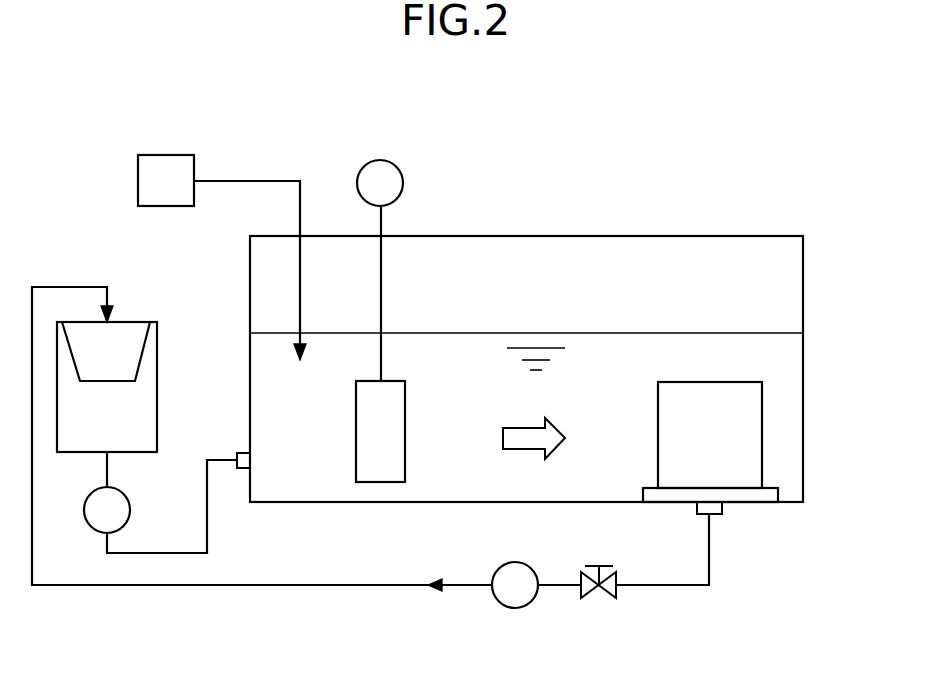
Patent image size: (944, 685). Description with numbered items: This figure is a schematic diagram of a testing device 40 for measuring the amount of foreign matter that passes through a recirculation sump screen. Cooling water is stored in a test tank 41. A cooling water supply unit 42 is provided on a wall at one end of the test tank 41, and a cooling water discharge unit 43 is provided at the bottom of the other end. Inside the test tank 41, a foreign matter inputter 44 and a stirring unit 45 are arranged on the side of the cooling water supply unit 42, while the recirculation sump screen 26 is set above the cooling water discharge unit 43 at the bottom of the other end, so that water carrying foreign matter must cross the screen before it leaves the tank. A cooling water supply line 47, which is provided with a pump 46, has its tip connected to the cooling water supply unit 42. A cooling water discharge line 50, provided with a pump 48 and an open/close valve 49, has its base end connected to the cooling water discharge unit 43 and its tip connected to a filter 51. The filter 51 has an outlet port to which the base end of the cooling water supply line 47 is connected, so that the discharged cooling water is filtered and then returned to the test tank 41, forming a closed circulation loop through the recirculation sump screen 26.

The testing device 40 is at (777, 152).
The test tank 41 is at (803, 428).
The cooling water supply unit 42 is at (234, 453).
The cooling water discharge unit 43 is at (722, 510).
The foreign matter inputter 44 is at (167, 155).
The stirring unit 45 is at (380, 483).
The pump 46 is at (130, 510).
The cooling water supply line 47 is at (207, 510).
The pump 48 is at (515, 608).
The open/close valve 49 is at (600, 598).
The cooling water discharge line 50 is at (676, 585).
The filter 51 is at (158, 340).
The recirculation sump screen 26 is at (762, 393).